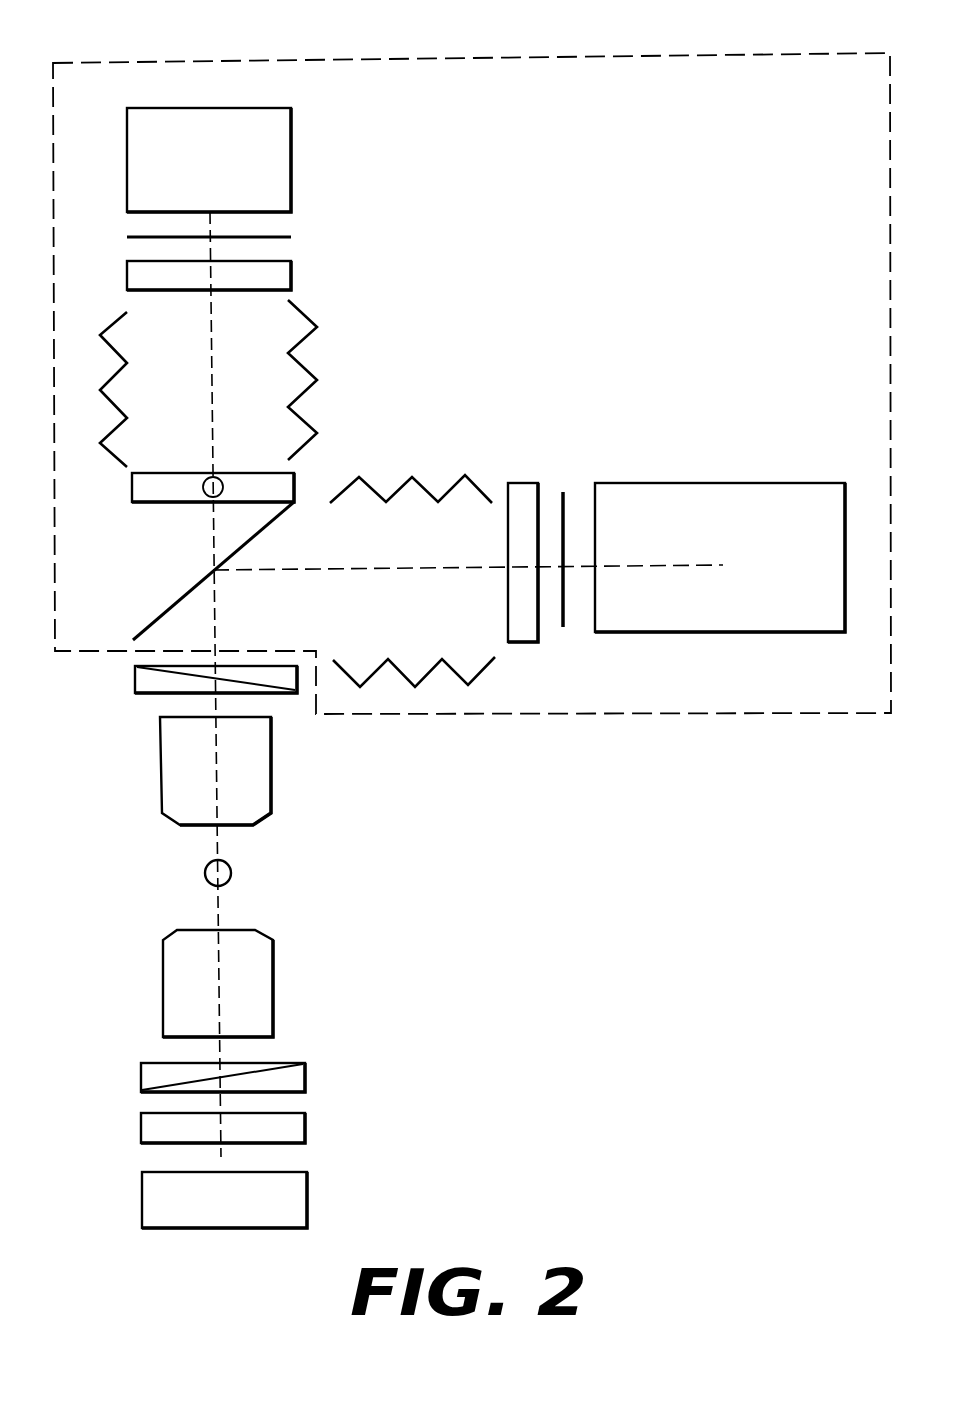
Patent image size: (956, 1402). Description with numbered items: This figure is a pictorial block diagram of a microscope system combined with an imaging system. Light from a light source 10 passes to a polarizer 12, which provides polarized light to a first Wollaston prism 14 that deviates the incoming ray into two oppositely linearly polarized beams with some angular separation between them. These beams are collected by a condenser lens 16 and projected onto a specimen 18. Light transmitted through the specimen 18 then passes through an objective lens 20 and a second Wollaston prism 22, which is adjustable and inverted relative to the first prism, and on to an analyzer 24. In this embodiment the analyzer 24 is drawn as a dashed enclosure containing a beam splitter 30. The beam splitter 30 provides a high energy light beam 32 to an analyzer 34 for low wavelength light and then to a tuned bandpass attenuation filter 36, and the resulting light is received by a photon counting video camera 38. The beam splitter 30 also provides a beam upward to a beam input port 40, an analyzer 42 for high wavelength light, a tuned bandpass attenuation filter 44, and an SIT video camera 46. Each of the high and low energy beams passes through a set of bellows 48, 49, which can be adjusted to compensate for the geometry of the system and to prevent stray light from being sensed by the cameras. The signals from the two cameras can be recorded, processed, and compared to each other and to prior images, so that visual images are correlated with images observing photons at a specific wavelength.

The light source 10 is at (307, 1197).
The polarizer 12 is at (305, 1128).
The first Wollaston prism 14 is at (305, 1078).
The condenser lens 16 is at (273, 963).
The specimen 18 is at (231, 869).
The objective lens 20 is at (271, 768).
The second Wollaston prism 22 is at (135, 680).
The analyzer 24 is at (728, 53).
The beam splitter 30 is at (183, 598).
The high energy light beam 32 is at (325, 567).
The analyzer for low wavelength light 34 is at (522, 483).
The tuned bandpass attenuation filter 36 is at (558, 490).
The photon counting video camera 38 is at (713, 483).
The beam input port 40 is at (295, 486).
The analyzer for high wavelength light 42 is at (291, 272).
The tuned bandpass attenuation filter 44 is at (291, 237).
The SIT video camera 46 is at (291, 158).
The bellows 48 is at (423, 482).
The bellows 49 is at (317, 360).